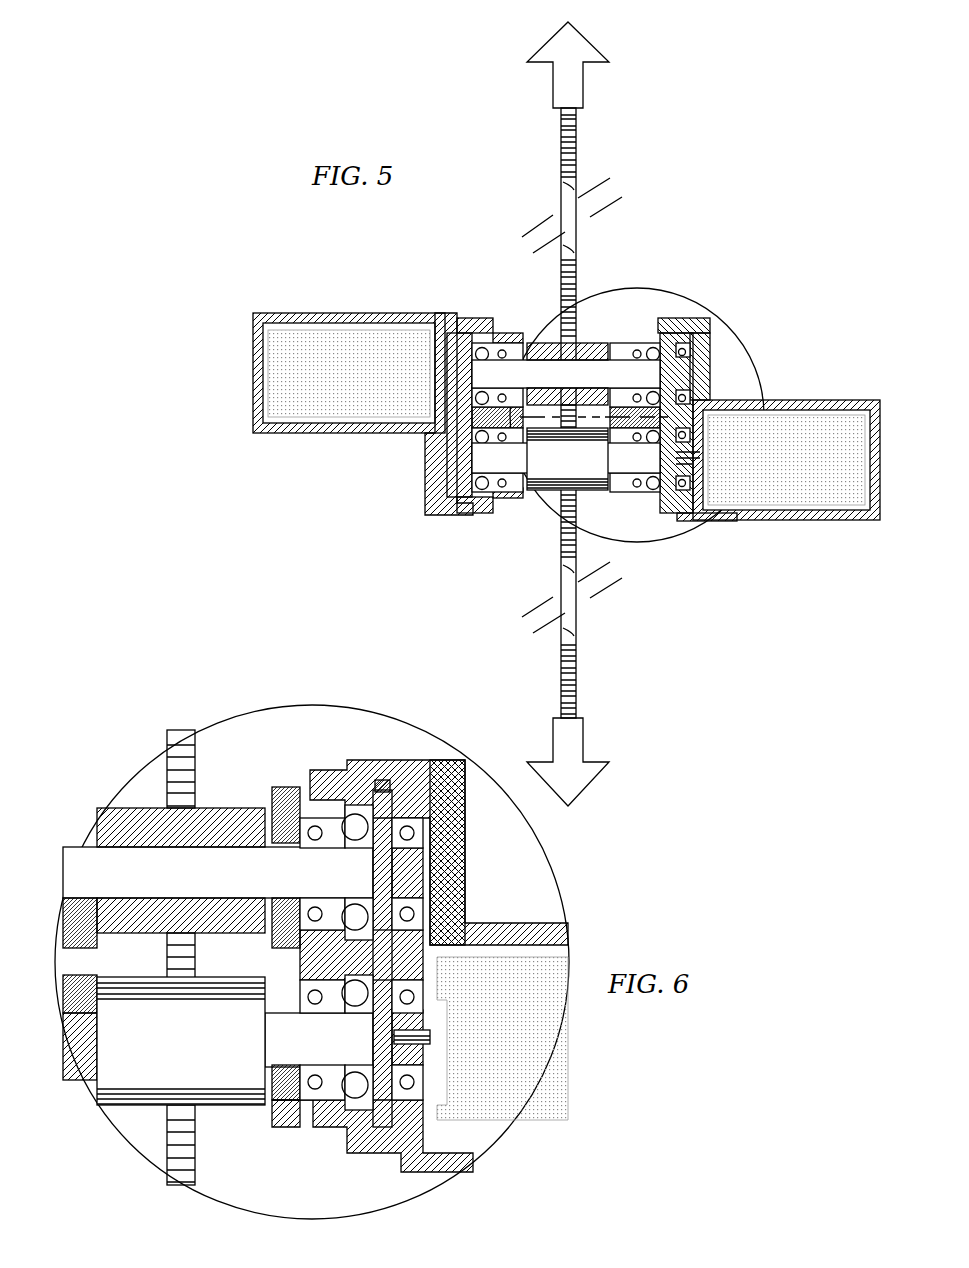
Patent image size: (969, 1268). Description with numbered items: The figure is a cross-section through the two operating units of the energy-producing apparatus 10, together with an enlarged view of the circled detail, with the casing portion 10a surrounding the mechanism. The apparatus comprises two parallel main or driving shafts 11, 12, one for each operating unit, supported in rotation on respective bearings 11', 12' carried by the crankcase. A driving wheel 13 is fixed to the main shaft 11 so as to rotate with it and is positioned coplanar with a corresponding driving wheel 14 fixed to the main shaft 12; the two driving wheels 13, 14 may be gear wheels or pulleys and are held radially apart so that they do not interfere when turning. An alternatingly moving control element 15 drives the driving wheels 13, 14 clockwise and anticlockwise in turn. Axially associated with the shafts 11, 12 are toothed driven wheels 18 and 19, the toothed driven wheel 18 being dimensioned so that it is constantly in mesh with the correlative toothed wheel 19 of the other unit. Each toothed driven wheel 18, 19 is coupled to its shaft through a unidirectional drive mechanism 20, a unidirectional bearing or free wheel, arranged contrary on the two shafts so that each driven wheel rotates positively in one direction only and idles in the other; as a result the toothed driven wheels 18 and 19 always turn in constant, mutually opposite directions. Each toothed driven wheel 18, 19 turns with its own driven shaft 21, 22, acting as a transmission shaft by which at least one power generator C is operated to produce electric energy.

In FIG. 5, the apparatus 10 is at (550, 443).
In FIG. 5, the housing wall portion 10a is at (452, 518).
In FIG. 6, the housing wall portion 10a is at (470, 835).
In FIG. 5, the main shaft 11 is at (566, 330).
In FIG. 6, the main shaft 11 is at (218, 832).
In FIG. 6, the bearing 11' is at (286, 840).
In FIG. 5, the main shaft 12 is at (566, 506).
In FIG. 6, the main shaft 12 is at (226, 1116).
In FIG. 6, the bearing 12' is at (268, 1155).
In FIG. 5, the driving wheel 13 is at (545, 340).
In FIG. 6, the driving wheel 13 is at (130, 812).
In FIG. 5, the driving wheel 14 is at (553, 478).
In FIG. 6, the driving wheel 14 is at (120, 1075).
In FIG. 5, the control element 15 is at (578, 693).
In FIG. 6, the control element 15 is at (178, 760).
In FIG. 6, the toothed driven wheel 18 is at (385, 780).
In FIG. 6, the toothed driven wheel 19 is at (380, 1115).
In FIG. 5, the unidirectional drive mechanism 20 is at (650, 342).
In FIG. 6, the unidirectional drive mechanism 20 is at (351, 820).
In FIG. 5, the driven shaft 21 is at (688, 482).
In FIG. 6, the driven shaft 21 is at (423, 1060).
In FIG. 5, the driven shaft 22 is at (448, 335).
In FIG. 6, the power generator C is at (555, 1028).